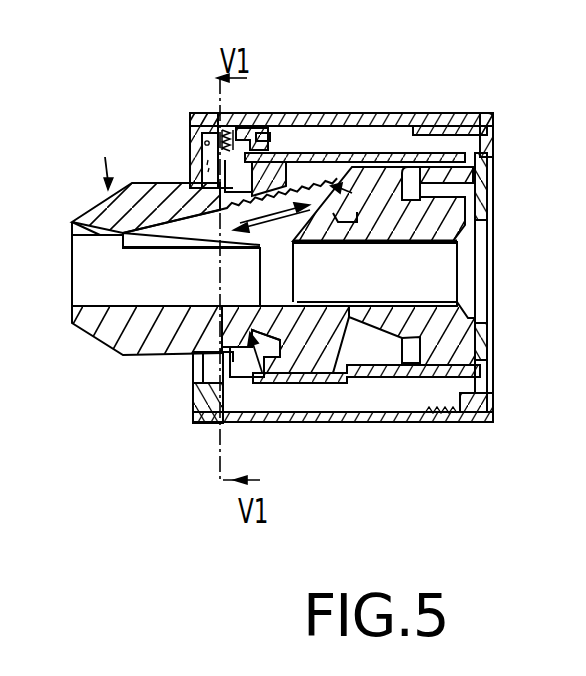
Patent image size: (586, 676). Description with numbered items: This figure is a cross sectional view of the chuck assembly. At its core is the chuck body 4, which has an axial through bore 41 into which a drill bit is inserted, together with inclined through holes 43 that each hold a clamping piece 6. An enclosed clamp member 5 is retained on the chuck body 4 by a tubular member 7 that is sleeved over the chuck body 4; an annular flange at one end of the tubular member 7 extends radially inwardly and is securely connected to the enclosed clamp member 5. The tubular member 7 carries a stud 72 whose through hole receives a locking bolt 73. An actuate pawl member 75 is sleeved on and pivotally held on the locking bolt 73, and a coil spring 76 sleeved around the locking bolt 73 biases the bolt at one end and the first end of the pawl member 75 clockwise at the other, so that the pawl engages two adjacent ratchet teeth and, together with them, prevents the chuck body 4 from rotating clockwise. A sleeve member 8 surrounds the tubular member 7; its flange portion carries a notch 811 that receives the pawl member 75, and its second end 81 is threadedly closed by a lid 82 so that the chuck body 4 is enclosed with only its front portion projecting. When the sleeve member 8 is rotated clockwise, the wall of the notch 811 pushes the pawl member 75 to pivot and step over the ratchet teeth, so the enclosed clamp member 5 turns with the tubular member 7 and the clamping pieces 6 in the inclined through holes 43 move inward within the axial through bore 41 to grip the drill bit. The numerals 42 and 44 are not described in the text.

The chuck body 4 is at (121, 148).
The axial through bore 41 is at (87, 248).
The locking ring 42 is at (295, 377).
The inclined through hole 43 is at (465, 114).
The sleeve 44 is at (473, 182).
The enclosed clamp member 5 is at (286, 162).
The clamping pieces 6 is at (376, 166).
The tubular member 7 is at (347, 153).
The stud 72 is at (255, 130).
The locking bolt 73 is at (268, 136).
The actuate pawl member 75 is at (207, 170).
The coil spring 76 is at (240, 134).
The sleeve member 8 is at (403, 433).
The second end of the sleeve member 81 is at (193, 412).
The notch 811 is at (197, 111).
The lid 82 is at (490, 193).